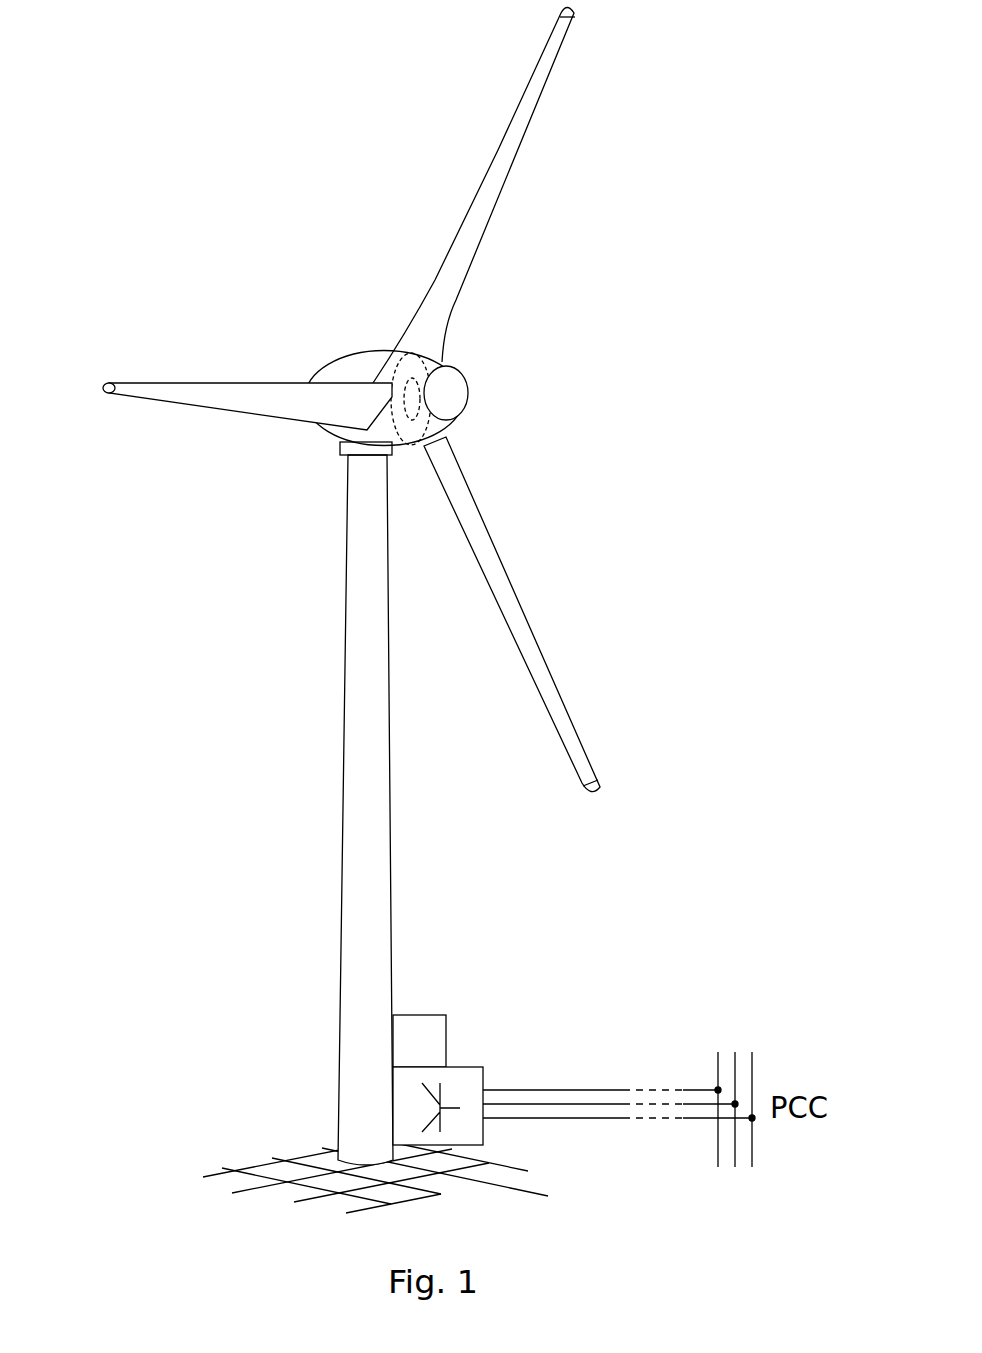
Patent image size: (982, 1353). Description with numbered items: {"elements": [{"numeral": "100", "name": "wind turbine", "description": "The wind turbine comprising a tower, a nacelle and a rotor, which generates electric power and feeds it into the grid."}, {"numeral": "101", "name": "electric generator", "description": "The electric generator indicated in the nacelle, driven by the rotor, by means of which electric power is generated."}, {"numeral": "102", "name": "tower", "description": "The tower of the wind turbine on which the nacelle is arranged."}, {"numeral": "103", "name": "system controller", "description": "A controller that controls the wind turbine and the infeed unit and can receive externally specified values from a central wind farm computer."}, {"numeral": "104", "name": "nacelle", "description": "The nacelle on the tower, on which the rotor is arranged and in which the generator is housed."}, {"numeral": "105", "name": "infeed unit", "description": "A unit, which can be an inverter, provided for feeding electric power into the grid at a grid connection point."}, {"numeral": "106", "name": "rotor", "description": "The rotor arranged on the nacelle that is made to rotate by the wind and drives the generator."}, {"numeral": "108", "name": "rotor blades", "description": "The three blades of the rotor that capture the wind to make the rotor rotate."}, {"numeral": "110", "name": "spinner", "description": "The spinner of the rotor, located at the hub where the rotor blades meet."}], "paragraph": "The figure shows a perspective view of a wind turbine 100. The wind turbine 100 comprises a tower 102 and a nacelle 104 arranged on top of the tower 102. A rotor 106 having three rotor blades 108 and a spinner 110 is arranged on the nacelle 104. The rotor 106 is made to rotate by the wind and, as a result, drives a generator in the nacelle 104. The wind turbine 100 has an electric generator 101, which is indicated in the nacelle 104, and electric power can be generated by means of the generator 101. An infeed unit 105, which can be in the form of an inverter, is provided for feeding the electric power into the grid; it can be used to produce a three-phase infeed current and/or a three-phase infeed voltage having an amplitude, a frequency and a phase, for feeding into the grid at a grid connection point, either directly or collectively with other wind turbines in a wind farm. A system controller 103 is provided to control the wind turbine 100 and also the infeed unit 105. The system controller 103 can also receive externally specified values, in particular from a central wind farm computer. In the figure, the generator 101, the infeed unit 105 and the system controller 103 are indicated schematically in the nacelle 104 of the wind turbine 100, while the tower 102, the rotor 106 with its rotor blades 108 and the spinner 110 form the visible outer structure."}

The wind turbine 100 is at (396, 611).
The generator 101 is at (413, 366).
The tower 102 is at (380, 890).
The controller 103 is at (446, 1040).
The nacelle 104 is at (362, 370).
The power converter 105 is at (483, 1128).
The rotor 106 is at (396, 400).
The rotor blade 108 is at (510, 143).
The hub 110 is at (453, 393).